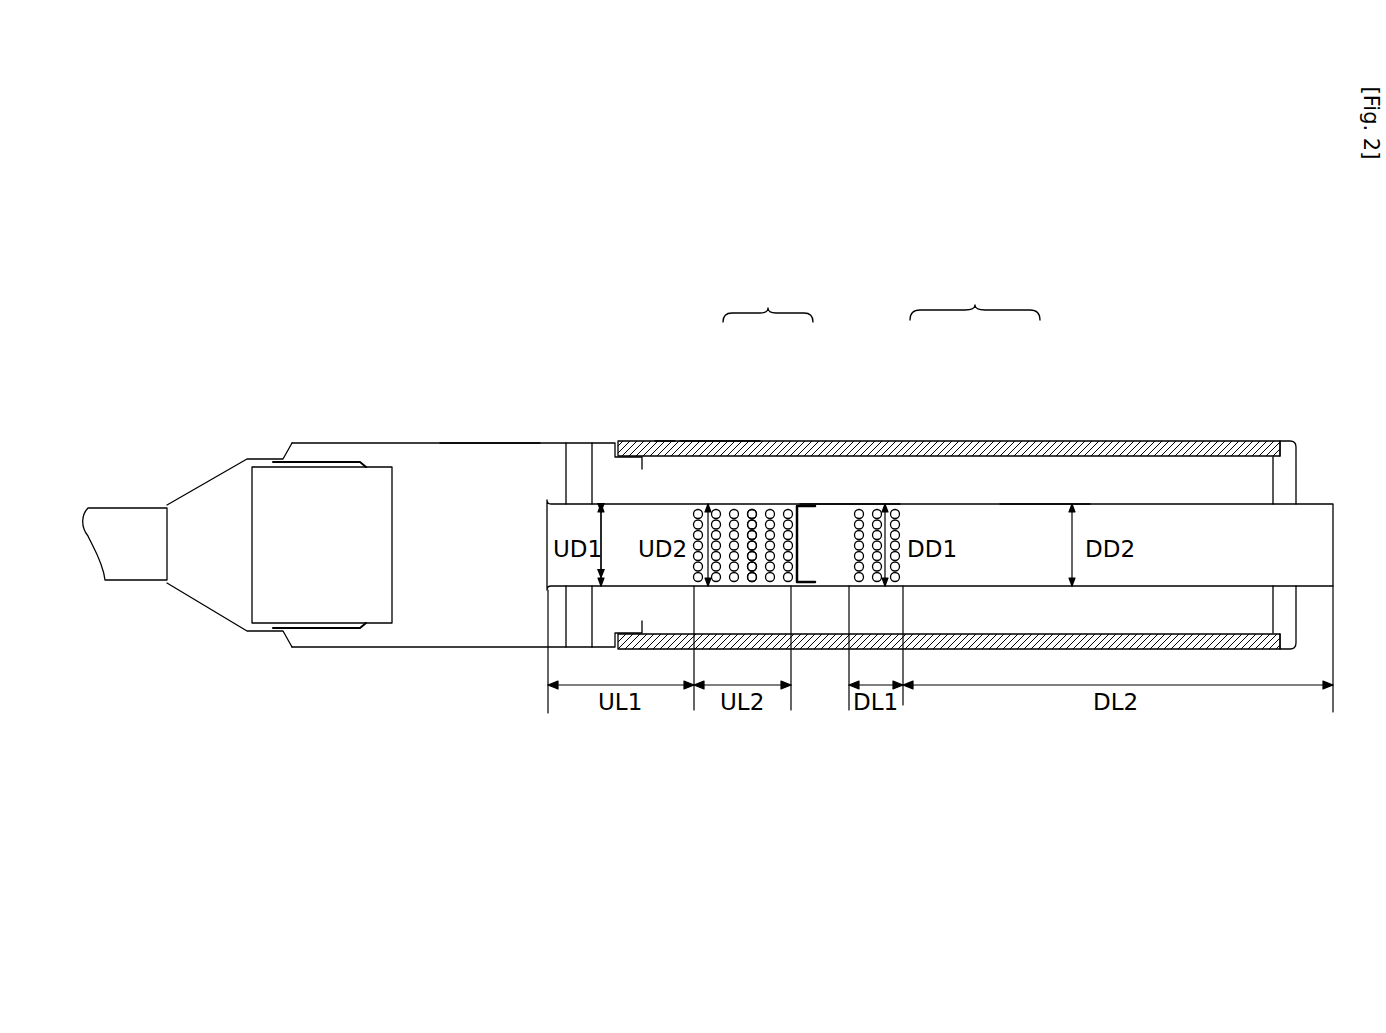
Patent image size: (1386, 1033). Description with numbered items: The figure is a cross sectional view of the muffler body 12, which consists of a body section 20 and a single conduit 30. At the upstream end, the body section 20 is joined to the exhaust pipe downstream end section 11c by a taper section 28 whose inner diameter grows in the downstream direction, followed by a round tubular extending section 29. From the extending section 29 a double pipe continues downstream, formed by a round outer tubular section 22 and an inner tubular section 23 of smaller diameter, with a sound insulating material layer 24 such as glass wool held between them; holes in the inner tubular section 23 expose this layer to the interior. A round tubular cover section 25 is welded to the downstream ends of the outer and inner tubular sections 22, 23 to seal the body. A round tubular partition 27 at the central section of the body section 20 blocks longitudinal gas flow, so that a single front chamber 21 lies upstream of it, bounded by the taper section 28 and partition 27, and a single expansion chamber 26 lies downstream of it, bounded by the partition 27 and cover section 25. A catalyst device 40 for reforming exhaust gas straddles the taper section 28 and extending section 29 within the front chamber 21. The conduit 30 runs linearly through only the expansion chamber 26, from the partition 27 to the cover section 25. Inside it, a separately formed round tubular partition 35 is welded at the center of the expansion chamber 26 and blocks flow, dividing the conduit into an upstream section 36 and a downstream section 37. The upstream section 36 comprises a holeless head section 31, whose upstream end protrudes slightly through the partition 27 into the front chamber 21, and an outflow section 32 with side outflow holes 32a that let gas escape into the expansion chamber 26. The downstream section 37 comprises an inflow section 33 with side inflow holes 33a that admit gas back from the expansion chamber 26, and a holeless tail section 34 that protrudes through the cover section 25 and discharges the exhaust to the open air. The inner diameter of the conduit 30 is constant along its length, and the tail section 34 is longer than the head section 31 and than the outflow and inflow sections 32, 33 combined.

The exhaust pipe downstream end section 11c is at (123, 505).
The muffler body 12 is at (730, 200).
The body section 20 is at (407, 434).
The front chamber 21 is at (486, 497).
The outer tubular section 22 is at (647, 441).
The inner tubular section 23 is at (663, 441).
The sound insulating material layer 24 is at (688, 441).
The cover section 25 is at (1297, 480).
The expansion chamber 26 is at (1183, 492).
The partition 27 is at (563, 477).
The taper section 28 is at (205, 481).
The extending section 29 is at (362, 459).
The conduit 30 is at (853, 496).
The head section 31 is at (678, 503).
The outflow section 32 is at (777, 503).
The outflow holes 32a is at (753, 503).
The inflow section 33 is at (875, 503).
The inflow holes 33a is at (895, 504).
The tail section 34 is at (1043, 503).
The partition 35 is at (803, 547).
The upstream section 36 is at (768, 303).
The downstream section 37 is at (975, 298).
The catalyst device 40 is at (327, 485).